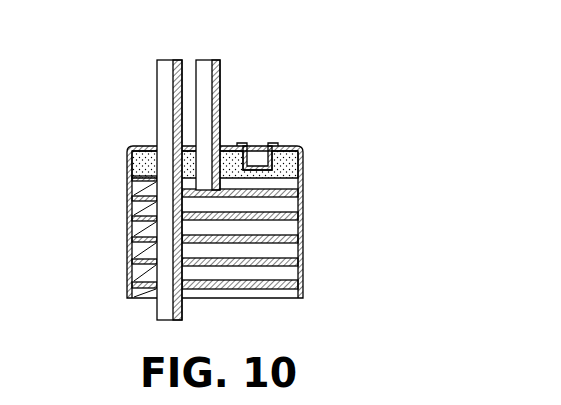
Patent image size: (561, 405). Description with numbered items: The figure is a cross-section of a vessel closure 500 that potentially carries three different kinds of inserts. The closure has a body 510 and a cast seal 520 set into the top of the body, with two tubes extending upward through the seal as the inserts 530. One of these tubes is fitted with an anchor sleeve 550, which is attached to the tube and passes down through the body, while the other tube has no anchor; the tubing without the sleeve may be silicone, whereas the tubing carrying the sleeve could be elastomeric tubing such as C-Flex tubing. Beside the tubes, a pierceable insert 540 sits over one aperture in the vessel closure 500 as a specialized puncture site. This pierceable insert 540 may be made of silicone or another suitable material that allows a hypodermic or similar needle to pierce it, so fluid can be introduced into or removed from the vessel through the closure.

The vessel closure 500 is at (223, 199).
The body 510 is at (305, 152).
The cast seal 520 is at (128, 163).
The inserts 530 is at (221, 66).
The pierceable insert 540 is at (256, 158).
The anchor sleeve 550 is at (131, 214).